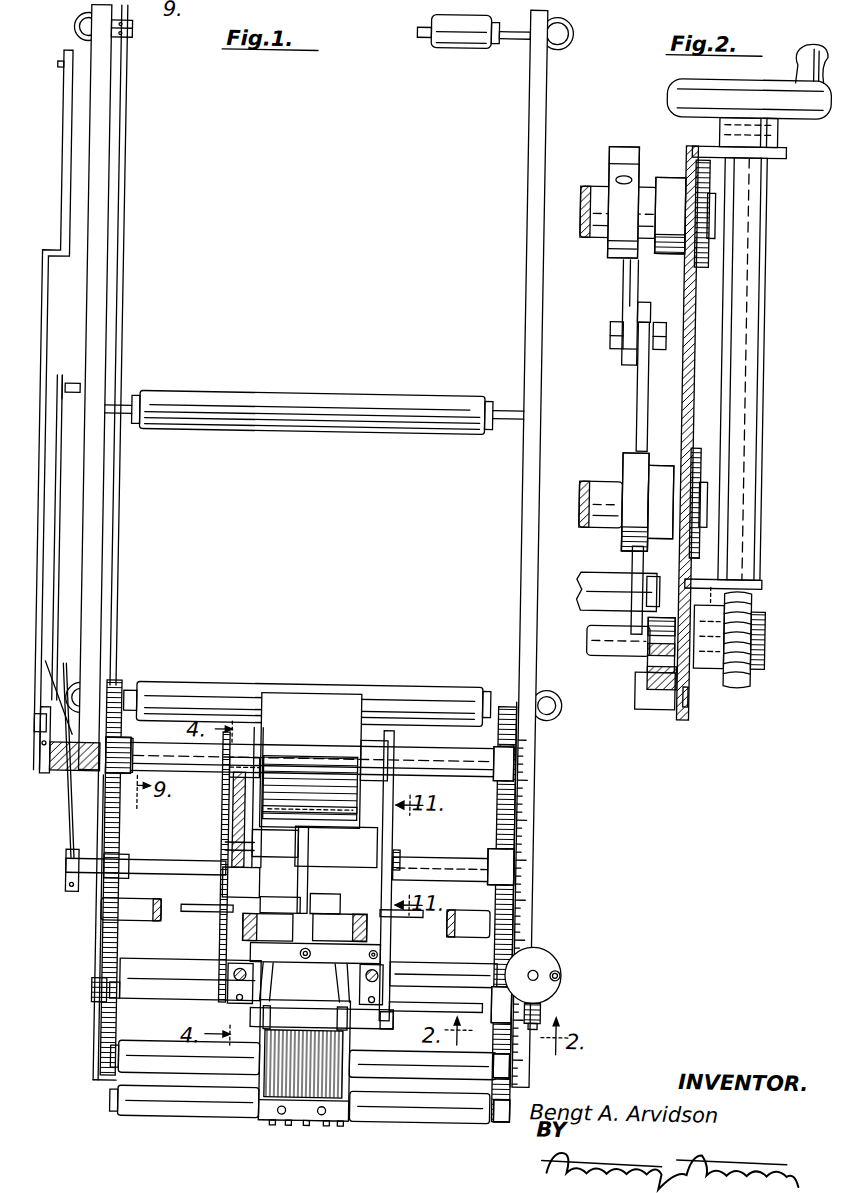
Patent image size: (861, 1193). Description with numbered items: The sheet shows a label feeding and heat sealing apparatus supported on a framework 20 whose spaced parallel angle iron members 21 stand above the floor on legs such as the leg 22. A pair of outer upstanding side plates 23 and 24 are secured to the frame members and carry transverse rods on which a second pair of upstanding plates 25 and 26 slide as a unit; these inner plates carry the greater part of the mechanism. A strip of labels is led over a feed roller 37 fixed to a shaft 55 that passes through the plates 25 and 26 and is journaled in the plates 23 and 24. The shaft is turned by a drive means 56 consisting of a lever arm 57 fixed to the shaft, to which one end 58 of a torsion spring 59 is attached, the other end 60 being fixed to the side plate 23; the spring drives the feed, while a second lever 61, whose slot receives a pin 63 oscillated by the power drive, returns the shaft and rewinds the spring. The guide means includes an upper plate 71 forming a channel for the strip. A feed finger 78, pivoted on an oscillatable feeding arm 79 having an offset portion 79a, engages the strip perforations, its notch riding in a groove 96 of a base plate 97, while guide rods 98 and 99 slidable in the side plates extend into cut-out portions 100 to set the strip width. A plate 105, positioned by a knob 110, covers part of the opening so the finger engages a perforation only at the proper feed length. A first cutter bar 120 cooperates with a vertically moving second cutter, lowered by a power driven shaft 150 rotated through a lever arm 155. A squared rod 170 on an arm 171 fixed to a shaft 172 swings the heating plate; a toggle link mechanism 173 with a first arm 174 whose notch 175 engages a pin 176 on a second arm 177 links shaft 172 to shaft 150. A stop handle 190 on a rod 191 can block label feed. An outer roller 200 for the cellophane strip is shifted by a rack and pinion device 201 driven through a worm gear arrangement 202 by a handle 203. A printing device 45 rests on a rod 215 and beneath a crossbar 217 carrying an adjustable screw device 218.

In FIG. 1, the framework 20 is at (310, 545).
In FIG. 1, the angle iron members 21 is at (95, 596).
In FIG. 1, the leg 22 is at (71, 23).
In FIG. 1, the side plate 23 is at (105, 966).
In FIG. 1, the side plate 24 is at (518, 806).
In FIG. 2, the side plate 24 is at (689, 386).
In FIG. 1, the upstanding plate 25 is at (229, 850).
In FIG. 1, the upstanding plate 26 is at (399, 843).
In FIG. 1, the feed roller 37 is at (318, 716).
In FIG. 1, the printing device 45 is at (287, 1130).
In FIG. 1, the shaft 55 is at (459, 755).
In FIG. 1, the drive means 56 is at (30, 578).
In FIG. 1, the lever arm 57 is at (39, 733).
In FIG. 1, the end of torsion spring 58 is at (50, 718).
In FIG. 1, the torsion spring 59 is at (80, 779).
In FIG. 1, the other end of torsion spring 60 is at (100, 796).
In FIG. 1, the second lever 61 is at (43, 405).
In FIG. 1, the pin 63 is at (52, 70).
In FIG. 1, the upper plate 71 is at (377, 778).
In FIG. 1, the feed finger 78 is at (312, 836).
In FIG. 1, the feeding arm 79 is at (308, 842).
In FIG. 1, the offset portion 79a is at (265, 881).
In FIG. 1, the groove 96 is at (330, 900).
In FIG. 1, the base plate 97 is at (321, 899).
In FIG. 1, the guide rod 98 is at (401, 917).
In FIG. 1, the guide rod 99 is at (210, 916).
In FIG. 1, the cut-out portions 100 is at (272, 928).
In FIG. 1, the plate 105 is at (336, 846).
In FIG. 1, the knob 110 is at (408, 857).
In FIG. 1, the first cutter bar 120 is at (340, 929).
In FIG. 1, the power driven shaft 150 is at (478, 916).
In FIG. 2, the power driven shaft 150 is at (592, 196).
In FIG. 1, the lever arm 155 is at (62, 460).
In FIG. 1, the squared rod 170 is at (453, 980).
In FIG. 2, the squared rod 170 is at (617, 591).
In FIG. 2, the arm 171 is at (637, 558).
In FIG. 1, the shaft 172 is at (163, 868).
In FIG. 2, the shaft 172 is at (607, 482).
In FIG. 2, the toggle link mechanism 173 is at (629, 365).
In FIG. 2, the first arm 174 is at (639, 428).
In FIG. 2, the notch 175 is at (648, 314).
In FIG. 2, the pin 176 is at (636, 333).
In FIG. 2, the second arm 177 is at (630, 283).
In FIG. 1, the stop handle 190 is at (85, 12).
In FIG. 1, the rod 191 is at (122, 80).
In FIG. 1, the outer roller 200 is at (160, 1107).
In FIG. 1, the rack and pinion device 201 is at (495, 1030).
In FIG. 2, the rack and pinion device 201 is at (642, 650).
In FIG. 1, the worm gear arrangement 202 is at (548, 1016).
In FIG. 2, the worm gear arrangement 202 is at (766, 603).
In FIG. 1, the handle 203 is at (557, 966).
In FIG. 2, the handle 203 is at (672, 93).
In FIG. 1, the rod 215 is at (369, 1021).
In FIG. 1, the crossbar 217 is at (315, 953).
In FIG. 1, the adjustable screw device 218 is at (315, 960).